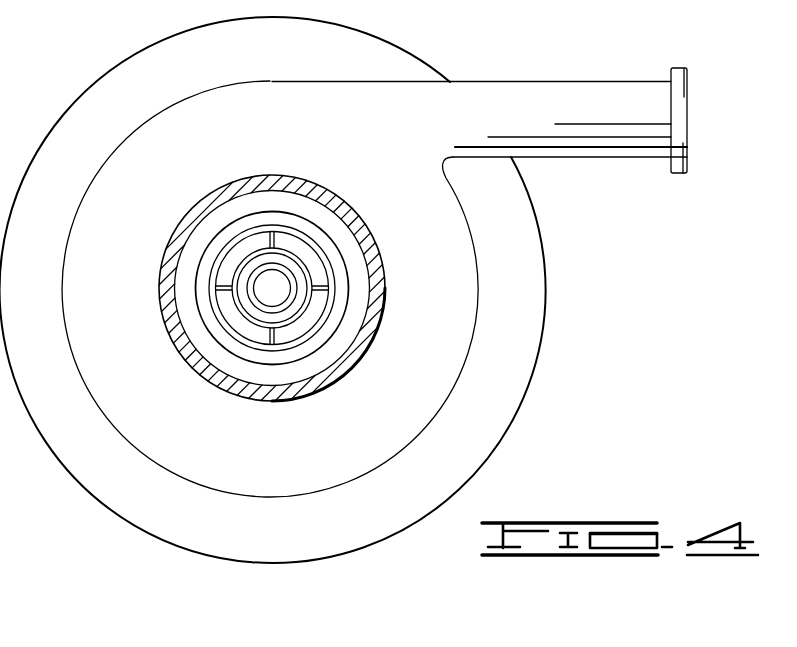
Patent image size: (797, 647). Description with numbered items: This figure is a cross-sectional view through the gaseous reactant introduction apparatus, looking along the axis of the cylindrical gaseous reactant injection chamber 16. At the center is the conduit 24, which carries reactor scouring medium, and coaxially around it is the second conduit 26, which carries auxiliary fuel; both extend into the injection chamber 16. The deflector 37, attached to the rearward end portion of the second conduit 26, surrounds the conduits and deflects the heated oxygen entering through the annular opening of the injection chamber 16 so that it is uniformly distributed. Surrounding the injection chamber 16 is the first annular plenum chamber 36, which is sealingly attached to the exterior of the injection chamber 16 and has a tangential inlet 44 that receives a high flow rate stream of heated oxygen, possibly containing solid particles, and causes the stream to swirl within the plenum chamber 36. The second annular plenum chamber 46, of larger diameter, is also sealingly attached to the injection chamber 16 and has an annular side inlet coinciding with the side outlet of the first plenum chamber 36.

The first annular plenum chamber 36 is at (163, 122).
The second annular plenum chamber 46 is at (411, 47).
The tangential inlet 44 is at (583, 82).
The cylindrical gaseous reactant injection chamber 16 is at (328, 194).
The deflector 37 is at (308, 348).
The second conduit 26 is at (297, 260).
The conduit 24 is at (297, 285).